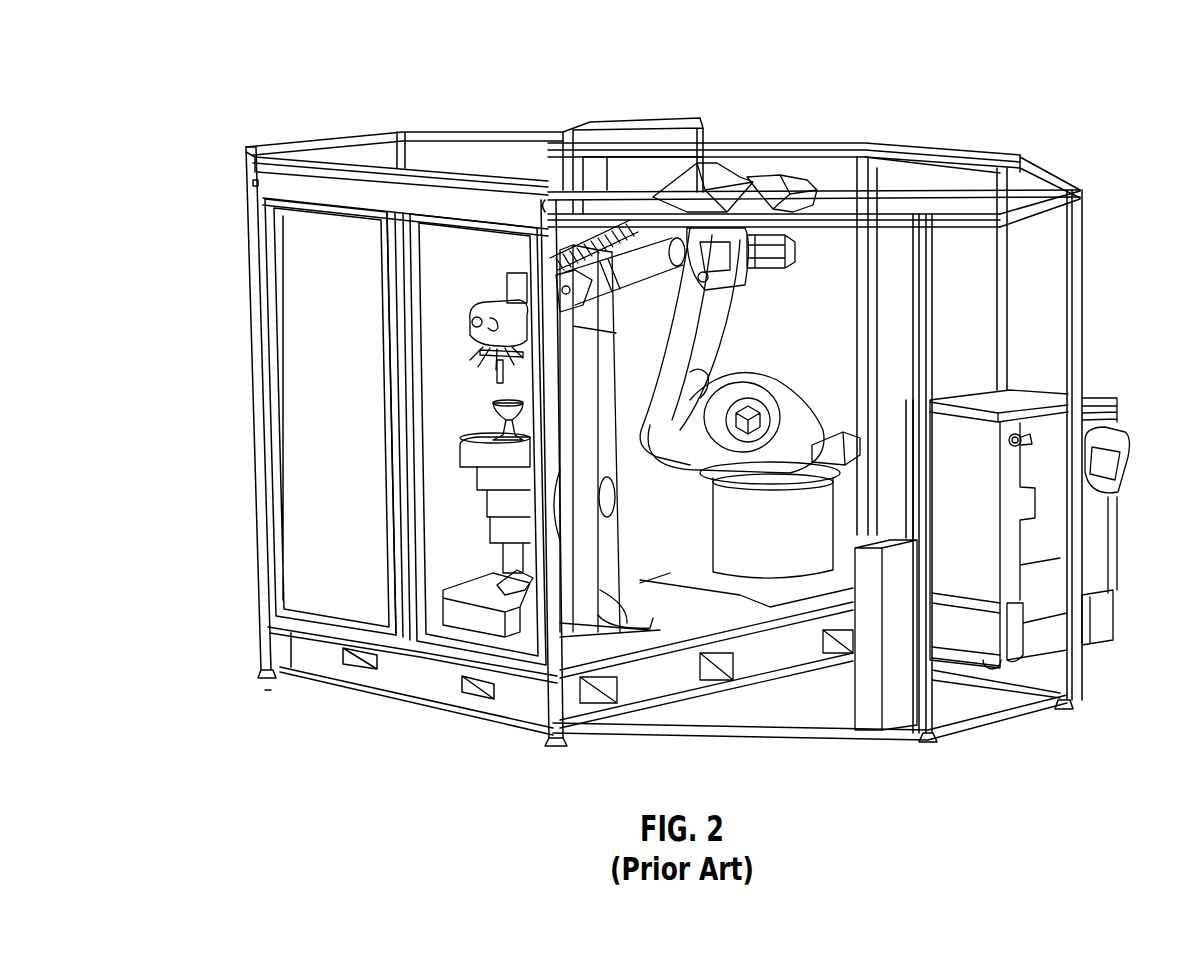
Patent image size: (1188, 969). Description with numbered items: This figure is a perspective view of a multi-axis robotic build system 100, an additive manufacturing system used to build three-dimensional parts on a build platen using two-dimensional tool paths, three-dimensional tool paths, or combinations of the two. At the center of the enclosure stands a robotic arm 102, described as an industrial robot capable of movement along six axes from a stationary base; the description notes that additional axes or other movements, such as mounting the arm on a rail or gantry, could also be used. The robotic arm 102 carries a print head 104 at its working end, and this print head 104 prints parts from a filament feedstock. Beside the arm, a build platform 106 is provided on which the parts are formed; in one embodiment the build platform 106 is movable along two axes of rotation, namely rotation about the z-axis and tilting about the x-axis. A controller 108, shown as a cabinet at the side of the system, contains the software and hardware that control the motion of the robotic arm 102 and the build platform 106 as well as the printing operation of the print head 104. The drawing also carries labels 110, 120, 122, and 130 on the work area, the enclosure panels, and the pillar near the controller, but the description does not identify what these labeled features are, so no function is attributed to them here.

The multi-axis robotic build system 100 is at (215, 88).
The robotic arm 102 is at (783, 400).
The print head 104 is at (484, 300).
The build platform 106 is at (470, 455).
The controller 108 is at (1082, 320).
The workpiece 110 is at (493, 400).
The access door 120 is at (279, 233).
The control pillar 122 is at (900, 672).
The spray pattern 130 is at (473, 345).